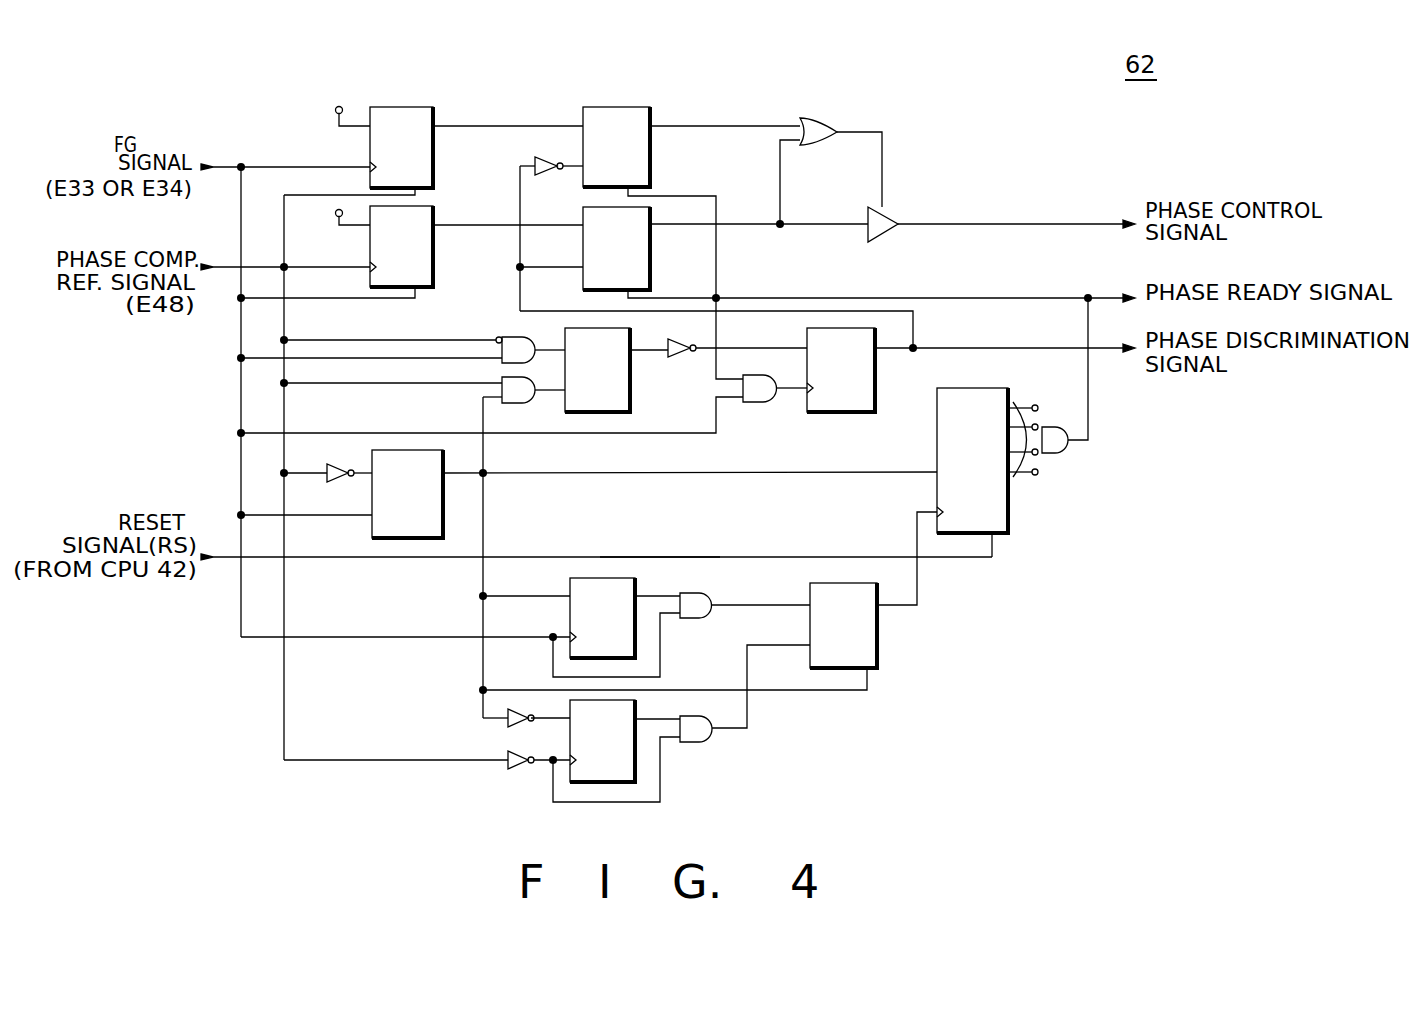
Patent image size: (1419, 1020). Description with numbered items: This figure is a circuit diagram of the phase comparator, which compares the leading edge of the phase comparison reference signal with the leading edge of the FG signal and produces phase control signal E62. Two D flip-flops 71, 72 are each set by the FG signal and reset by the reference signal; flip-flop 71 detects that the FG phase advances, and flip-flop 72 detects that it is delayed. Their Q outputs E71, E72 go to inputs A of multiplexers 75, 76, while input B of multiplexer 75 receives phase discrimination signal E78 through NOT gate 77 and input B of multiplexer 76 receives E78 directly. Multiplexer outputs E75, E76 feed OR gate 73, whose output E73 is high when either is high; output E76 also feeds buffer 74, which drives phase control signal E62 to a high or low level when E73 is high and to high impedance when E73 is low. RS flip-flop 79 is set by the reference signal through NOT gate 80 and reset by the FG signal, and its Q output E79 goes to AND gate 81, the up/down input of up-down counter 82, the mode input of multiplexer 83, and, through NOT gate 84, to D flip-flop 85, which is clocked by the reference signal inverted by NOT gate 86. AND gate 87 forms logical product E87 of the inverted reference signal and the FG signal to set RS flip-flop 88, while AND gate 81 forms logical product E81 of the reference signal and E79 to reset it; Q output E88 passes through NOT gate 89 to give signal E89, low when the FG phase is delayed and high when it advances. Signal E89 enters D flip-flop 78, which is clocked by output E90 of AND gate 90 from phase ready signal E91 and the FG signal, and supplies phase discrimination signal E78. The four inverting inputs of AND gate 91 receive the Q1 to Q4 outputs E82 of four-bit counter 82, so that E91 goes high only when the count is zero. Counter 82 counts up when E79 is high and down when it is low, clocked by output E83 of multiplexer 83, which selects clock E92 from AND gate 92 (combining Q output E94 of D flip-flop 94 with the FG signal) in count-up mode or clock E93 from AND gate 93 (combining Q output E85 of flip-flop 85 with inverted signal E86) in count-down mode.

The D flip-flop 71 is at (415, 108).
The D flip-flop 72 is at (433, 215).
The OR gate 73 is at (815, 118).
The buffer 74 is at (888, 233).
The multiplexer 75 is at (655, 107).
The multiplexer 76 is at (650, 265).
The NOT gate 77 is at (533, 162).
The D flip-flop 78 is at (875, 392).
The RS flip-flop 79 is at (443, 520).
The NOT gate 80 is at (348, 458).
The AND gate 81 is at (502, 390).
The up-down counter 82 is at (968, 388).
The multiplexer 83 is at (877, 655).
The NOT gate 84 is at (508, 728).
The D flip-flop 85 is at (635, 716).
The NOT gate 86 is at (508, 768).
The AND gate 87 is at (504, 337).
The RS flip-flop 88 is at (630, 405).
The NOT gate 89 is at (679, 338).
The AND gate 90 is at (755, 402).
The AND gate 91 is at (1065, 455).
The AND gate 92 is at (712, 600).
The AND gate 93 is at (710, 742).
The D flip-flop 94 is at (570, 580).
The phase control signal E62 is at (1006, 224).
The Q output of D flip-flop 71 E71 is at (503, 126).
The Q output of D flip-flop 72 E72 is at (476, 225).
The output of OR gate 73 E73 is at (882, 185).
The Q output of multiplexer 75 E75 is at (740, 126).
The Q output of multiplexer 76 E76 is at (748, 224).
The phase discrimination signal E78 is at (913, 348).
The Q output of RS flip-flop 79 E79 is at (483, 478).
The logical product signal E81 is at (548, 392).
The Q1 to Q4 outputs of up-down counter 82 E82 is at (1020, 482).
The Q output of multiplexer 83 E83 is at (885, 605).
The Q output of D flip-flop 85 E85 is at (660, 721).
The inverted signal of phase comparison reference signal E86 is at (550, 766).
The logical product signal E87 is at (550, 340).
The Q output of RS flip-flop 88 E88 is at (648, 350).
The output signal of NOT gate 89 E89 is at (790, 348).
The output of AND gate 90 E90 is at (795, 388).
The phase ready signal E91 is at (1088, 410).
The output of AND gate 92 E92 is at (788, 605).
The output of AND gate 93 E93 is at (750, 728).
The Q output of D flip-flop 94 E94 is at (660, 557).